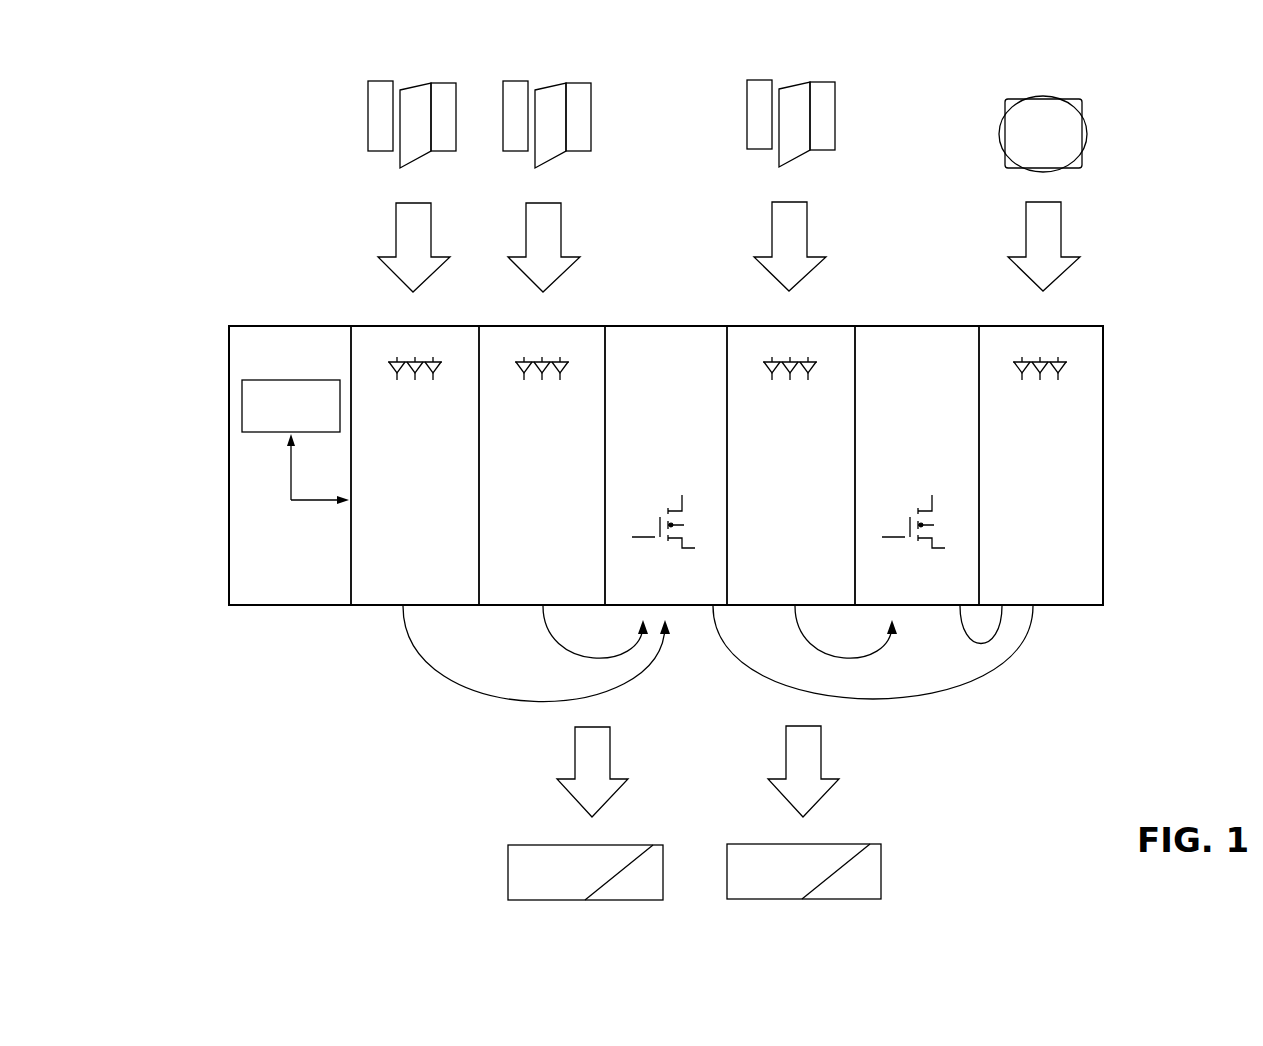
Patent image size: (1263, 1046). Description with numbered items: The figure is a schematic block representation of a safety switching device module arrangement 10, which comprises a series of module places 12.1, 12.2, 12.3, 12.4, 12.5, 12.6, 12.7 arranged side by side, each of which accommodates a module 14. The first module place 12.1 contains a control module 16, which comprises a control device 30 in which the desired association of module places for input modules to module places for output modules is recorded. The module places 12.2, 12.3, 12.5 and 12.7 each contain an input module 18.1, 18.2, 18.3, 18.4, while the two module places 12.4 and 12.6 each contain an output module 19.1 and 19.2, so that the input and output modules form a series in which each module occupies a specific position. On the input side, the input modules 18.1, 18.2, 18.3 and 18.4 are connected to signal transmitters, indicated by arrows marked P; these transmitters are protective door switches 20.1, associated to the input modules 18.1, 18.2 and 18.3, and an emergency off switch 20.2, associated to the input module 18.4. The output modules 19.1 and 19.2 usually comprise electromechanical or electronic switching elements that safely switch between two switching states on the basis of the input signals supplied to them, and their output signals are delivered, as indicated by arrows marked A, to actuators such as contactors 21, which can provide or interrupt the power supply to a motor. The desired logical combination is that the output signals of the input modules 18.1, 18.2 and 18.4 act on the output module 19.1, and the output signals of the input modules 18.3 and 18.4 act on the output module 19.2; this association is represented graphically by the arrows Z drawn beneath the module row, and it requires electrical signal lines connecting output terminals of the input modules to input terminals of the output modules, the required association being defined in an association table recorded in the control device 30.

The safety switching device module arrangement 10 is at (226, 291).
The module 14 is at (1145, 452).
The control module 16 is at (283, 326).
The control device 30 is at (242, 414).
The input module 18.1 is at (378, 326).
The input module 18.2 is at (559, 326).
The input module 18.3 is at (827, 326).
The input module 18.4 is at (1085, 326).
The output module 19.1 is at (664, 326).
The output module 19.2 is at (924, 326).
The protective door switch 20.1 is at (413, 79).
The emergency off switch 20.2 is at (1046, 86).
The module place 12.1 is at (268, 614).
The module place 12.2 is at (375, 608).
The module place 12.3 is at (503, 607).
The module place 12.4 is at (690, 622).
The module place 12.5 is at (773, 606).
The module place 12.6 is at (933, 625).
The module place 12.7 is at (1090, 605).
The contactor 21 is at (516, 872).
The arrows Z is at (528, 703).